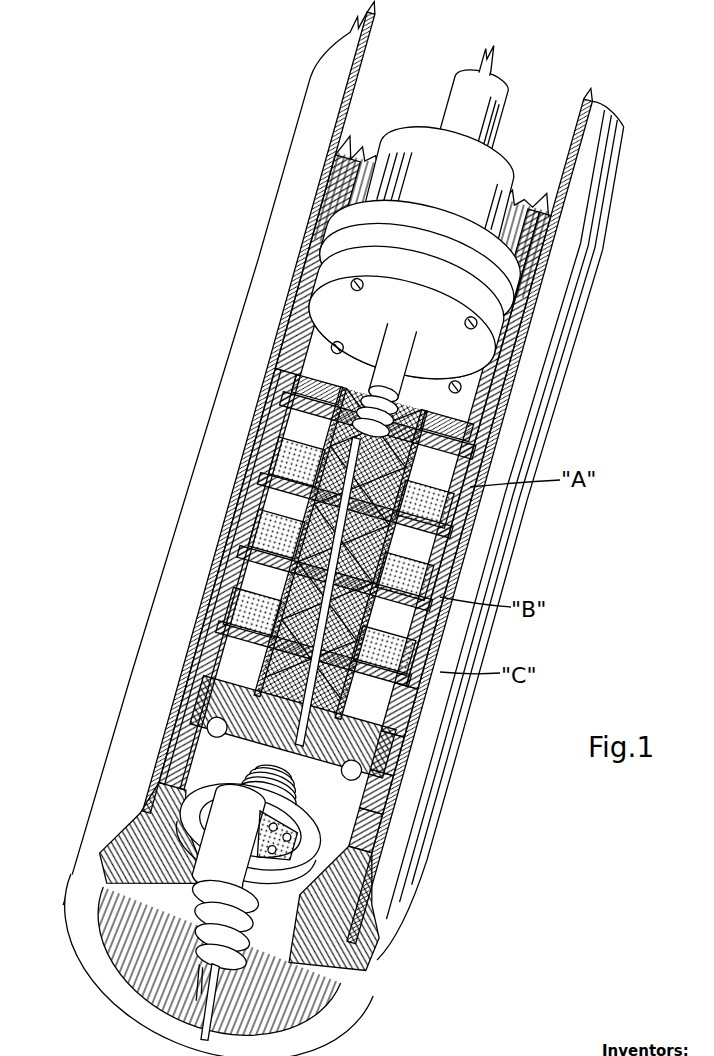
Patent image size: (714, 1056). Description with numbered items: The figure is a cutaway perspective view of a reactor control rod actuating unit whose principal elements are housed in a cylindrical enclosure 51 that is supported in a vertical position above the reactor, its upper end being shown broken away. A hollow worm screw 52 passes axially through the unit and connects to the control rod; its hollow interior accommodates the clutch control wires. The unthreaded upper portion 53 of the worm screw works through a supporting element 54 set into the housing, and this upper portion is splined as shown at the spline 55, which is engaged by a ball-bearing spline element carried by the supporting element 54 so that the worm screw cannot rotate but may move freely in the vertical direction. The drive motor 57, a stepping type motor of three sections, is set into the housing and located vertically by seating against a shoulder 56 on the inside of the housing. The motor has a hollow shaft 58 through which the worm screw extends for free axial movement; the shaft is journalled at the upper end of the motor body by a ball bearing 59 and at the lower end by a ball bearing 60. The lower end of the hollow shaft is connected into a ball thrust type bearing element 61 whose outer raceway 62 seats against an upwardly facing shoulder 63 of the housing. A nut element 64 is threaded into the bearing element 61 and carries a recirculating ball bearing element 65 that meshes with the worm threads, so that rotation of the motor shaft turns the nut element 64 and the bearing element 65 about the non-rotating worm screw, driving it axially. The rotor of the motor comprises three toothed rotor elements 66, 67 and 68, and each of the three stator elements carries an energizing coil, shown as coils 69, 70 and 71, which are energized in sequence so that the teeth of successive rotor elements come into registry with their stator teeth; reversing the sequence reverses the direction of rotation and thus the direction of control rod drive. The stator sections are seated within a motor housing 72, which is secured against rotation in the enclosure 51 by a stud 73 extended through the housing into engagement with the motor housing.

The cylindrical enclosure 51 is at (448, 640).
The worm screw 52 is at (243, 957).
The upper portion of worm screw 53 is at (277, 343).
The supporting element 54 is at (512, 305).
The spline 55 is at (393, 357).
The shoulder 56 is at (400, 712).
The drive motor 57 is at (440, 580).
The hollow shaft 58 is at (460, 552).
The ball bearing 59 is at (440, 436).
The ball bearing 60 is at (413, 720).
The ball thrust type bearing element 61 is at (378, 823).
The outer raceway 62 is at (383, 767).
The upwardly facing shoulder 63 is at (388, 805).
The nut element 64 is at (227, 770).
The recirculating ball bearing element 65 is at (283, 840).
The rotor element 66 is at (247, 480).
The rotor element 67 is at (217, 552).
The rotor element 68 is at (217, 573).
The stator coil 69 is at (248, 455).
The stator coil 70 is at (230, 535).
The stator coil 71 is at (212, 608).
The motor housing 72 is at (233, 512).
The stud 73 is at (207, 595).